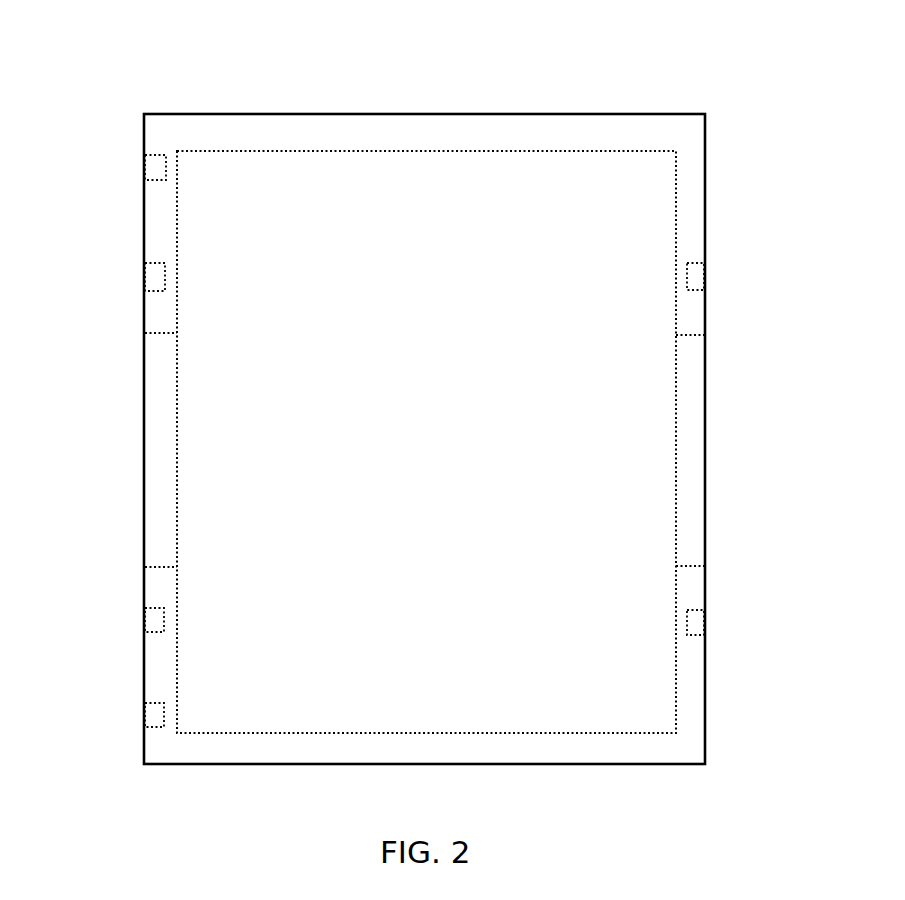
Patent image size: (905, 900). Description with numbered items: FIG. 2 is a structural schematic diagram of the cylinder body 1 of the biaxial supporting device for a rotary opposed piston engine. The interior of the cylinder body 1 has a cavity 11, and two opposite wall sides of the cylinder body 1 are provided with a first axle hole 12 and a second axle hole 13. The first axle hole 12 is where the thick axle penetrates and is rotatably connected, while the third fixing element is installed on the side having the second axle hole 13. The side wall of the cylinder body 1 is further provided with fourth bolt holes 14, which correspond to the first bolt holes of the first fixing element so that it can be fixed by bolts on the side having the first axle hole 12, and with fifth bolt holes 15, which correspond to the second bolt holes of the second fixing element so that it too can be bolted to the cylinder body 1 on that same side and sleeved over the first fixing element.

The cylinder body 1 is at (502, 111).
The cavity 11 is at (537, 181).
The first axle hole 12 is at (153, 432).
The second axle hole 13 is at (693, 432).
The fourth bolt holes 14 is at (143, 273).
The fifth bolt holes 15 is at (143, 165).